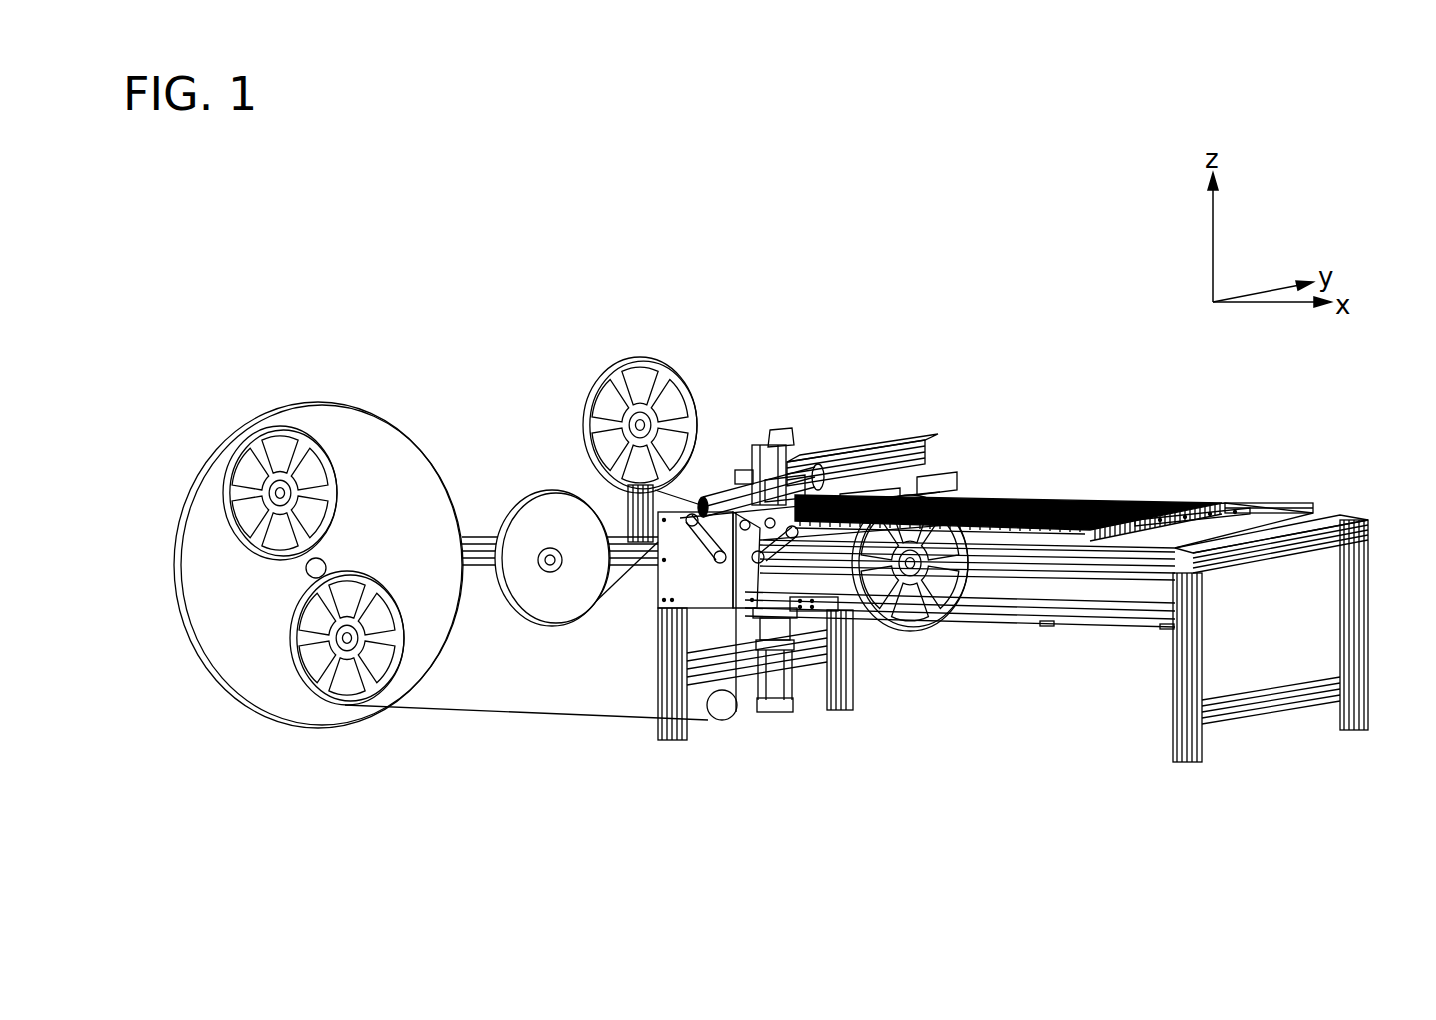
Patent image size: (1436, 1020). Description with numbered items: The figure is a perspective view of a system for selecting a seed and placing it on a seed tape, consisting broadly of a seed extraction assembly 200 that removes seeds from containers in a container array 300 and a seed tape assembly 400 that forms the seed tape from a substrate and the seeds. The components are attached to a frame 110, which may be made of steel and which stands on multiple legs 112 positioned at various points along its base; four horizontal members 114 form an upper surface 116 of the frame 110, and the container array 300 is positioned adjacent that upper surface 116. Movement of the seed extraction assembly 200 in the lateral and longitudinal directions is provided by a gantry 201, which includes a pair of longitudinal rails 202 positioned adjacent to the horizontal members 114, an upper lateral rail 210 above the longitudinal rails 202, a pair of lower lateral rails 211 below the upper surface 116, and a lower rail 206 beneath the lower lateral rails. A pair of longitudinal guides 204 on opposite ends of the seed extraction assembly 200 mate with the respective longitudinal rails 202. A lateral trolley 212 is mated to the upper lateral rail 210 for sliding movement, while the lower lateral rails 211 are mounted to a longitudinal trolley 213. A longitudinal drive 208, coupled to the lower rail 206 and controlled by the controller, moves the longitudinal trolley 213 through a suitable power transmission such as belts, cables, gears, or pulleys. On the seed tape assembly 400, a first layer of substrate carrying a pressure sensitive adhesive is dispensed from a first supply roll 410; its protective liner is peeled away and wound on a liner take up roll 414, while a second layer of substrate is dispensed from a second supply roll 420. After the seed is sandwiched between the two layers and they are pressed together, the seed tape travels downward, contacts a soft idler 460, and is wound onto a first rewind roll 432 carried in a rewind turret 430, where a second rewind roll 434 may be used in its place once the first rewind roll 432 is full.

The frame 110 is at (1269, 580).
The legs 112 is at (690, 735).
The horizontal members 114 is at (1338, 520).
The upper surface 116 is at (1243, 512).
The seed extraction assembly 200 is at (787, 415).
The gantry 201 is at (861, 438).
The longitudinal rails 202 is at (1270, 505).
The longitudinal guides 204 is at (793, 492).
The lower rail 206 is at (1028, 610).
The longitudinal drive 208 is at (772, 712).
The upper lateral rail 210 is at (900, 447).
The lower lateral rails 211 is at (793, 620).
The lateral trolley 212 is at (730, 473).
The longitudinal trolley 213 is at (860, 602).
The container array 300 is at (1050, 482).
The seed tape assembly 400 is at (442, 312).
The first supply roll 410 is at (565, 628).
The liner take up roll 414 is at (660, 360).
The second supply roll 420 is at (920, 635).
The rewind turret 430 is at (272, 408).
The first rewind roll 432 is at (300, 677).
The second rewind roll 434 is at (346, 475).
The soft idler 460 is at (722, 712).